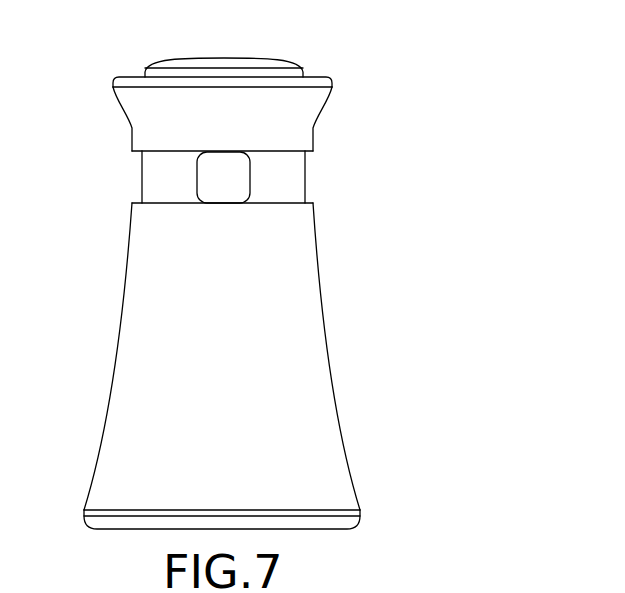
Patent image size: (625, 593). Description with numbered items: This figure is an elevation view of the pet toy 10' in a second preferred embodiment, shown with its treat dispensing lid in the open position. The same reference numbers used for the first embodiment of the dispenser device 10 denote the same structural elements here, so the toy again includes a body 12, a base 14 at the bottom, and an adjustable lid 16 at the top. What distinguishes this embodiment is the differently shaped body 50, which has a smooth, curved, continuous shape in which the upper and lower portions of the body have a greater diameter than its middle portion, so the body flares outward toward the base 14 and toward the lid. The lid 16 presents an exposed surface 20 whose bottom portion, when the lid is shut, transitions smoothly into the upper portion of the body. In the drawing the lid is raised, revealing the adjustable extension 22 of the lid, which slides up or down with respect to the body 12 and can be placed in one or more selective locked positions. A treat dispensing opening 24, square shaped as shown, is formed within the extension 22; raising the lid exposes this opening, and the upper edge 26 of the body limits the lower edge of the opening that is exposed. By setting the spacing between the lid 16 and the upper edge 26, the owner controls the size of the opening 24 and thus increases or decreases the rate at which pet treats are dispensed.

The pet toy 10' is at (430, 96).
The dispenser device 10 is at (431, 588).
The body 12 is at (294, 356).
The base 14 is at (330, 530).
The adjustable lid 16 is at (358, 70).
The exposed surface of the lid 20 is at (127, 115).
The adjustable extension 22 is at (293, 175).
The treat dispensing opening 24 is at (203, 180).
The upper edge of the body 26 is at (292, 203).
The body 50 is at (315, 346).